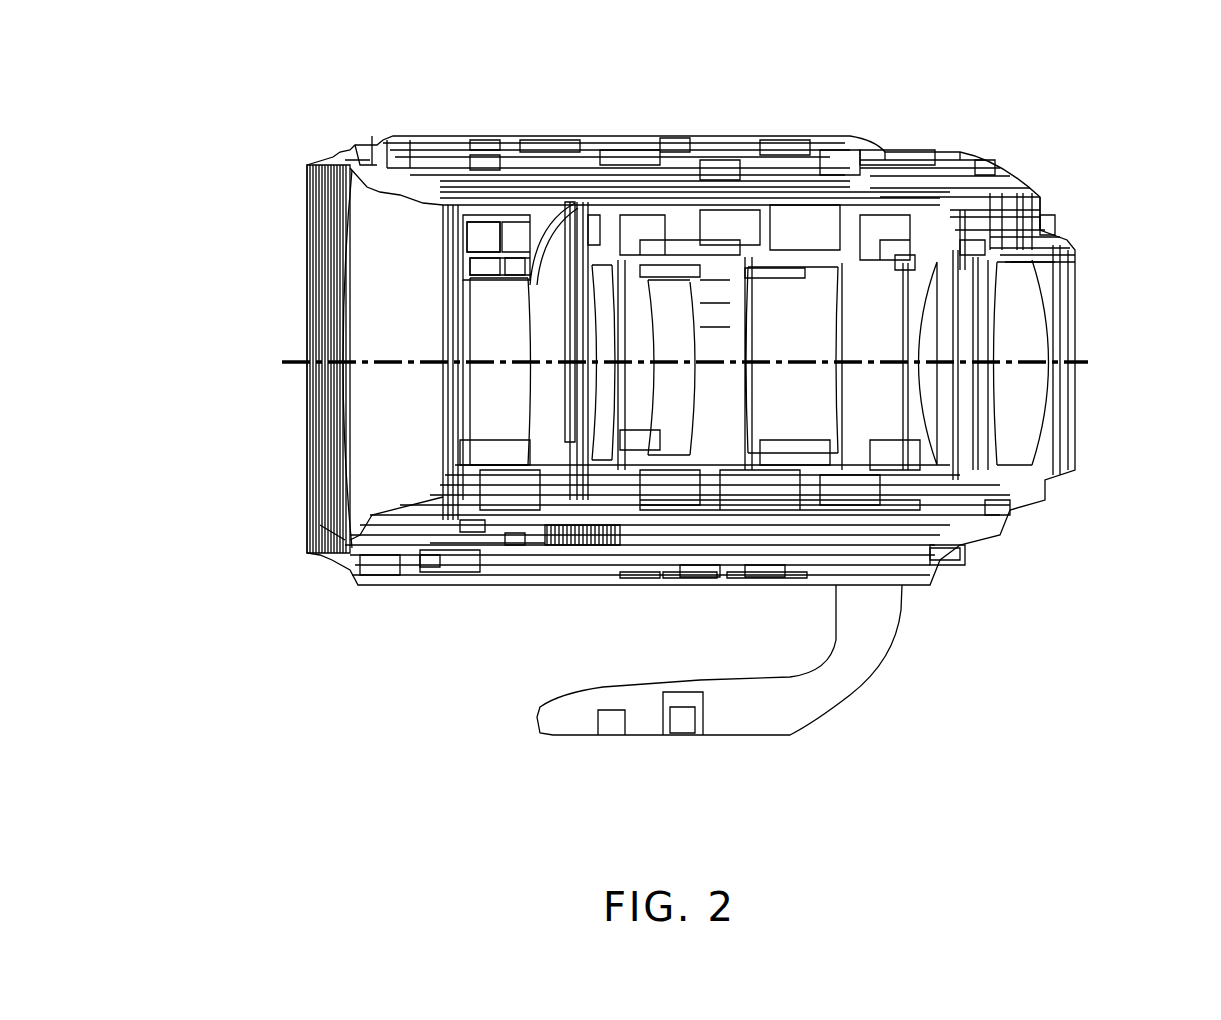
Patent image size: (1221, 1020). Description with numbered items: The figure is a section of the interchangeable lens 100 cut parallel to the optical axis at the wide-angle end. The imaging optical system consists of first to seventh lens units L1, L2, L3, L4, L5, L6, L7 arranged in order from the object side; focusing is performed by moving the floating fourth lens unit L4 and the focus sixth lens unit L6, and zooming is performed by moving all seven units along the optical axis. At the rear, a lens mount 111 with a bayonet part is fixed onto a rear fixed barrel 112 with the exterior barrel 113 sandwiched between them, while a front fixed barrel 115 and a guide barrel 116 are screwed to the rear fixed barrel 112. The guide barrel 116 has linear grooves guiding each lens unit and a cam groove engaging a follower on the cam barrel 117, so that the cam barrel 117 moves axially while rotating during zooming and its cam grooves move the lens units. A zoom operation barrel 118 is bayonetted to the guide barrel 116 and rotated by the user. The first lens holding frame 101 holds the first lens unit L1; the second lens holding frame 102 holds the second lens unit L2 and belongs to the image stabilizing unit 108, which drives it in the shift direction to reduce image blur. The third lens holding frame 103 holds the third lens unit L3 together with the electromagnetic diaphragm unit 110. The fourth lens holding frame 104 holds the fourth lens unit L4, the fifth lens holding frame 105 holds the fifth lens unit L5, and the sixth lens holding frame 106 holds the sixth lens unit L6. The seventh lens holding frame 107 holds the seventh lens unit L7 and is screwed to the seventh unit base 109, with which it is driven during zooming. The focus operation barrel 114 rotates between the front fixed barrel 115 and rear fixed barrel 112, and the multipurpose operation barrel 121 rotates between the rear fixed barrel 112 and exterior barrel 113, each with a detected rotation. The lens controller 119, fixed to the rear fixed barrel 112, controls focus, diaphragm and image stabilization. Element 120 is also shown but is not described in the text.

The interchangeable lens 100 is at (248, 112).
The first lens holding frame 101 is at (378, 182).
The second lens holding frame 102 is at (486, 272).
The third lens holding frame 103 is at (596, 233).
The fourth lens holding frame 104 is at (680, 273).
The fifth lens holding frame 105 is at (772, 277).
The sixth lens holding frame 106 is at (910, 263).
The seventh lens holding frame 107 is at (1030, 262).
The image stabilizing unit 108 is at (476, 232).
The seventh unit base 109 is at (977, 243).
The electromagnetic diaphragm unit 110 is at (567, 205).
The lens mount 111 is at (1047, 230).
The rear fixed barrel 112 is at (900, 162).
The exterior barrel 113 is at (988, 165).
The focus operation barrel 114 is at (765, 577).
The front fixed barrel 115 is at (700, 577).
The guide barrel 116 is at (518, 538).
The cam barrel 117 is at (473, 528).
The zoom operation barrel 118 is at (430, 562).
The lens controller 119 is at (1000, 513).
The front cover 120 is at (325, 527).
The multipurpose operation barrel 121 is at (943, 560).
The first lens unit L1 is at (368, 220).
The second lens unit L2 is at (485, 297).
The third lens unit L3 is at (593, 322).
The fourth lens unit L4 is at (672, 333).
The fifth lens unit L5 is at (775, 352).
The sixth lens unit L6 is at (905, 338).
The seventh lens unit L7 is at (1015, 370).